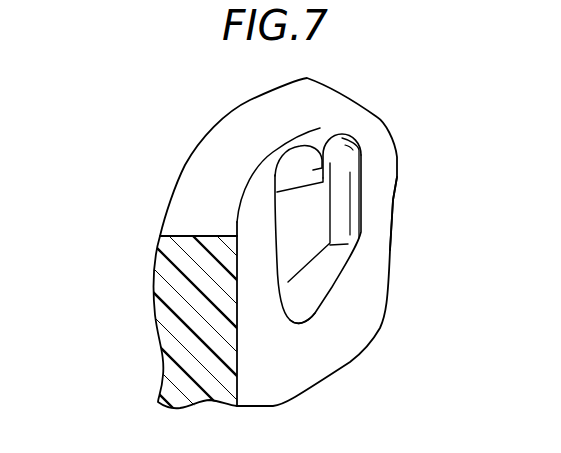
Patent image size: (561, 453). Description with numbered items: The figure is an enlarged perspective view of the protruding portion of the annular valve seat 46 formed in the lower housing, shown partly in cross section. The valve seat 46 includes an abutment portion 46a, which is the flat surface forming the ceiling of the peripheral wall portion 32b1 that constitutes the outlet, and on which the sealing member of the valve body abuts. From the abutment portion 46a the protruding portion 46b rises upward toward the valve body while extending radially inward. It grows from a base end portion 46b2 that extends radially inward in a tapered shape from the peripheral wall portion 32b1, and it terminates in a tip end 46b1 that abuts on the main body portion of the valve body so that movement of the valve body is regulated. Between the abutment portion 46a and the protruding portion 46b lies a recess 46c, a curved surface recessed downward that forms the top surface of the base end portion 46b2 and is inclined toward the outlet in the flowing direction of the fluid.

The valve seat 46 is at (275, 243).
The abutment portion 46a is at (187, 193).
The protruding portion 46b is at (350, 163).
The tip end 46b1 is at (320, 128).
The base end portion 46b2 is at (305, 310).
The recess 46c is at (307, 160).
The peripheral wall portion 32b1 is at (367, 328).